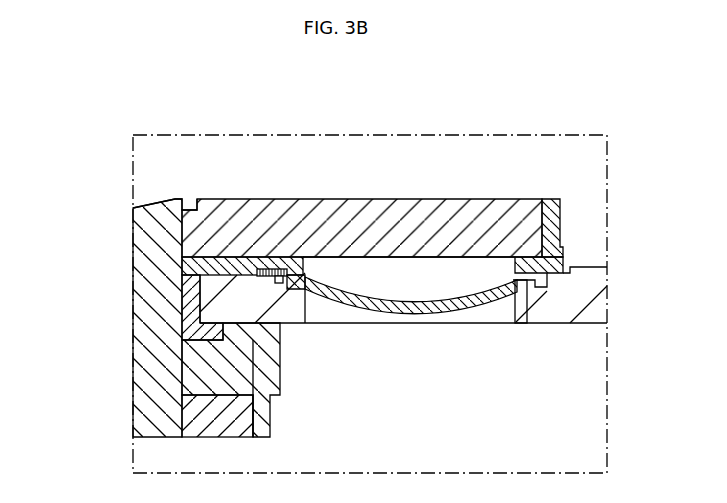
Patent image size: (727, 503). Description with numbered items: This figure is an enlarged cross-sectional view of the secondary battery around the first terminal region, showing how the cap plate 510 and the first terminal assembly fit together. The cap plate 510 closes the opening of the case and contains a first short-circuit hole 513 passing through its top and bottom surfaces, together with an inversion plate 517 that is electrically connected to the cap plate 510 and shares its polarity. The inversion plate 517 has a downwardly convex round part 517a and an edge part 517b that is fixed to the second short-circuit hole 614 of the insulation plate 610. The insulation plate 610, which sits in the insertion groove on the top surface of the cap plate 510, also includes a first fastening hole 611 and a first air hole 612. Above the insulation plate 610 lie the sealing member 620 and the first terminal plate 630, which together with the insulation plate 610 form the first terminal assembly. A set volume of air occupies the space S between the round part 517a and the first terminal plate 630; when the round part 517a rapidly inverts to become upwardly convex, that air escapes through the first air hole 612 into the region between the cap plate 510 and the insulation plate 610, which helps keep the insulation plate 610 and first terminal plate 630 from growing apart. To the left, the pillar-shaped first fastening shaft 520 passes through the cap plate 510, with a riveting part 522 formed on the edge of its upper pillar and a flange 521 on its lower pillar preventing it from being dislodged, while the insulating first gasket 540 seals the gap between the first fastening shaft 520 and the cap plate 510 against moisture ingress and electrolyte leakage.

The cap plate 510 is at (575, 299).
The first short-circuit hole 513 is at (306, 307).
The inversion plate 517 is at (426, 353).
The round part 517a is at (412, 310).
The edge part 517b is at (519, 330).
The first fastening shaft 520 is at (158, 340).
The flange 521 is at (230, 380).
The riveting part 522 is at (183, 198).
The first gasket 540 is at (190, 290).
The insulation plate 610 is at (563, 215).
The first fastening hole 611 is at (180, 269).
The first air hole 612 is at (565, 252).
The second short-circuit hole 614 is at (326, 262).
The sealing member 620 is at (273, 276).
The first terminal plate 630 is at (508, 198).
The space S is at (414, 289).